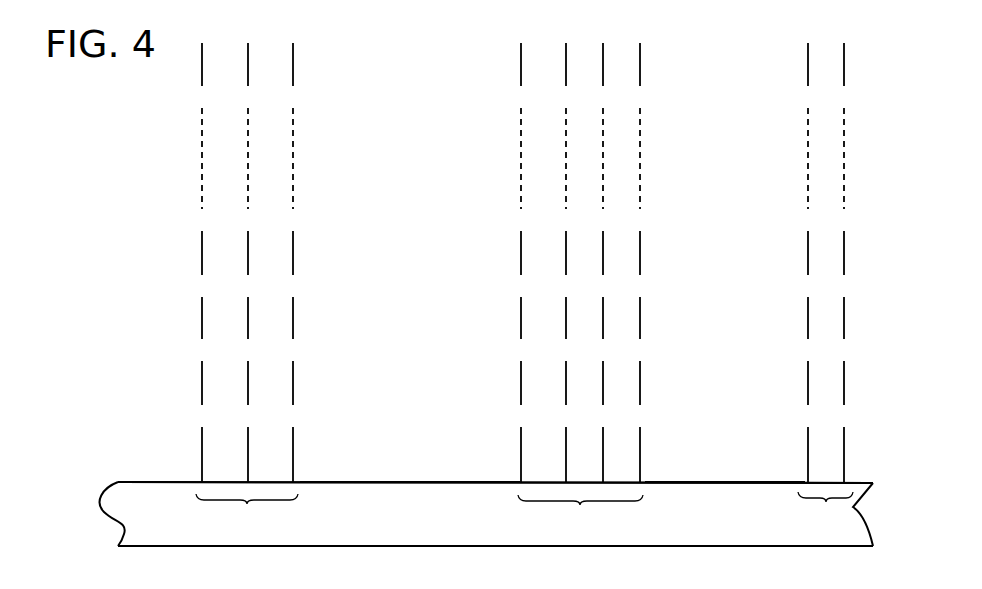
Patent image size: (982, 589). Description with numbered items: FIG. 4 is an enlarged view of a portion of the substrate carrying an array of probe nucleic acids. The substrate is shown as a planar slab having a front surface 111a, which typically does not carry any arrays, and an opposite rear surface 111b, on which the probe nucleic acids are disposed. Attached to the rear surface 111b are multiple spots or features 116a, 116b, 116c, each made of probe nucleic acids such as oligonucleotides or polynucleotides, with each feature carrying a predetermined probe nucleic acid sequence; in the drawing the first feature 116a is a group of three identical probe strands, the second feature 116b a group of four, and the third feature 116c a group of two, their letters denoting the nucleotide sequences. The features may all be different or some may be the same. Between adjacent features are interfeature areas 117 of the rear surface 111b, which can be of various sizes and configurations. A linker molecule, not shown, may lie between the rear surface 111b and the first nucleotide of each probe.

The front surface 111a is at (141, 546).
The rear surface 111b is at (143, 482).
The feature 116a is at (247, 277).
The feature 116b is at (580, 278).
The feature 116c is at (825, 275).
The interfeature area 117 is at (433, 483).